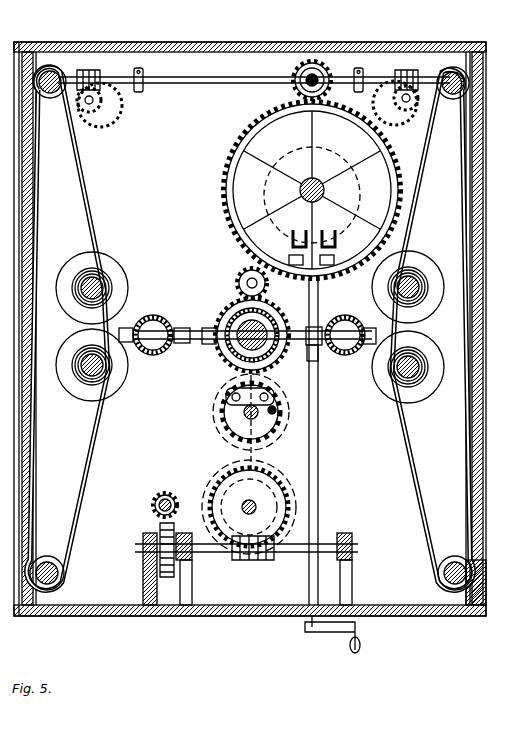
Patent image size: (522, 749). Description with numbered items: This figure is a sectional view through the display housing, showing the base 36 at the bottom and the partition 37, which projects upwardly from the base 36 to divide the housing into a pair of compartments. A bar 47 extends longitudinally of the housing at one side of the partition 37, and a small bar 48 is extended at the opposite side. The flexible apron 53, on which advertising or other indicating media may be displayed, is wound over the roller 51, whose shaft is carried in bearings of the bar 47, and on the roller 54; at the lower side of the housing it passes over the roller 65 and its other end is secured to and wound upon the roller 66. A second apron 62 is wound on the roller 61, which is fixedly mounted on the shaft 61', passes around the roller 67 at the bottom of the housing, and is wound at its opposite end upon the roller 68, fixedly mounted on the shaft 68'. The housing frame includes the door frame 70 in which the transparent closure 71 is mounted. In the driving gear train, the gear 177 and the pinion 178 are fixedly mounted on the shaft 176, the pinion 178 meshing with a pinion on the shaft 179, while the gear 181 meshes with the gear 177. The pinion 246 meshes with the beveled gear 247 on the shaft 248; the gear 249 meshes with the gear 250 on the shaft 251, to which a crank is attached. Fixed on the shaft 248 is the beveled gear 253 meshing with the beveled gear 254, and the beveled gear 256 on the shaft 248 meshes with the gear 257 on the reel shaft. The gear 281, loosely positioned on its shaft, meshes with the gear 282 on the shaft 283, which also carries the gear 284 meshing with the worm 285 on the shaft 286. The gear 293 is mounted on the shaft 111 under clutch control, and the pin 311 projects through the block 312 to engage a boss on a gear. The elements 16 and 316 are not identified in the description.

The bar 47 is at (468, 46).
The partition 37 is at (205, 54).
The base 36 is at (218, 616).
The transparent closure 71 is at (478, 383).
The apron 62 is at (92, 197).
The flexible apron 53 is at (445, 158).
The door frame 70 is at (480, 586).
The small bar 48 is at (50, 43).
The roller 51 is at (470, 72).
The roller 67 is at (64, 575).
The roller 65 is at (455, 592).
The roller 61 is at (98, 281).
The shaft 61' is at (80, 270).
The roller 68 is at (89, 382).
The shaft 68' is at (110, 386).
The roller 54 is at (416, 272).
The roller 66 is at (415, 378).
The shaft 179 is at (232, 78).
The gear 177 is at (356, 66).
The pinion 178 is at (402, 64).
The shaft 176 is at (312, 76).
The gear 250 is at (246, 266).
The gear 181 is at (225, 186).
The vertical drive shaft 16 is at (264, 373).
The gear 249 is at (288, 325).
The shaft 248 is at (237, 310).
The shaft 251 is at (240, 280).
The beveled gear 253 is at (150, 314).
The beveled gear 254 is at (178, 346).
The beveled gear 247 is at (216, 356).
The gear 257 is at (380, 328).
The pinion 246 is at (300, 352).
The beveled gear 256 is at (322, 355).
The block 312 is at (280, 385).
The pin 311 is at (222, 416).
The ratchet housing 316 is at (224, 432).
The gear 281 is at (235, 456).
The gear 282 is at (282, 484).
The shaft 283 is at (256, 507).
The gear 284 is at (274, 518).
The shaft 286 is at (358, 548).
The worm 285 is at (256, 561).
The shaft 111 is at (155, 504).
The gear 293 is at (165, 492).